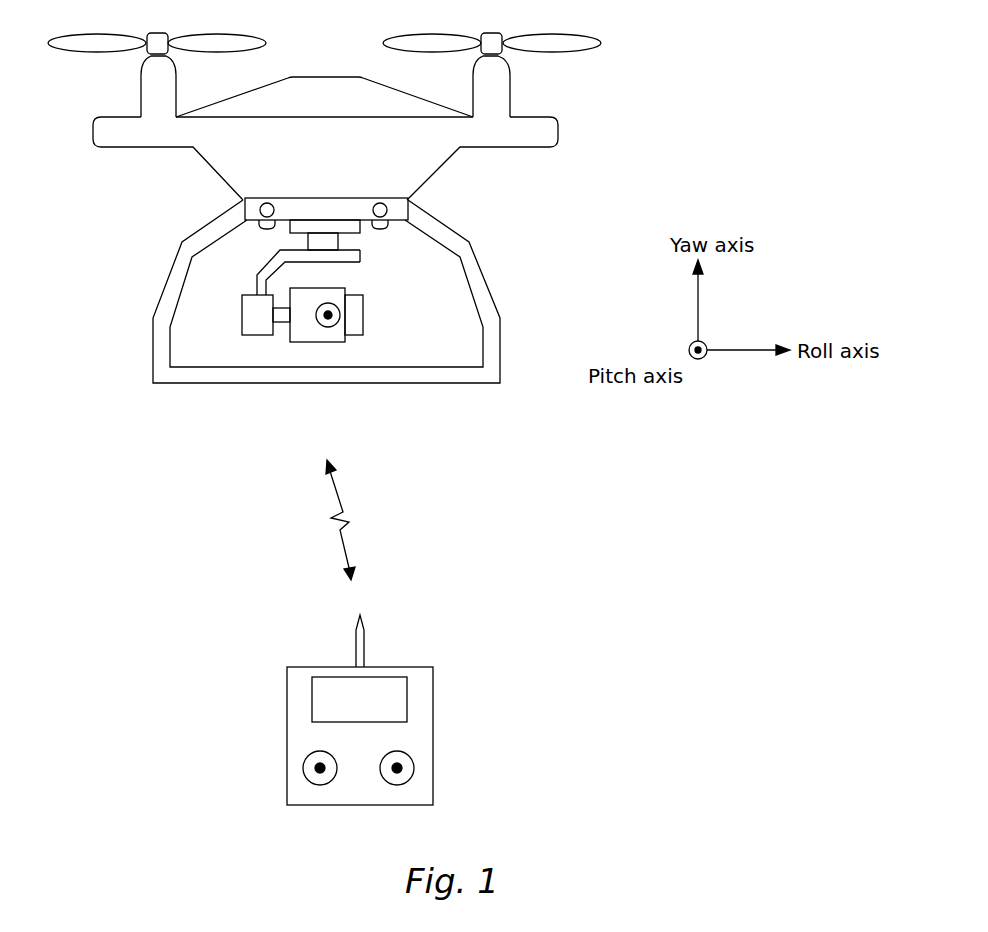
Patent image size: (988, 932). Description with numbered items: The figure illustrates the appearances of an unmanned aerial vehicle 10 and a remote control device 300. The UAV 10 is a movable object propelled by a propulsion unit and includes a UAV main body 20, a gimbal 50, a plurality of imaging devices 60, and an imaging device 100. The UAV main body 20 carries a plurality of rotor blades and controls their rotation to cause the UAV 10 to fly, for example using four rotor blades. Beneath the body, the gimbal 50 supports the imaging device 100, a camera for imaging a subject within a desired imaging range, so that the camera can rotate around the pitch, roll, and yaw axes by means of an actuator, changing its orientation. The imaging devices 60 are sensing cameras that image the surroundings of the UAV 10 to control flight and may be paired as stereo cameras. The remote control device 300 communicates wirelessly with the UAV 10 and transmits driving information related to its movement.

The unmanned aerial vehicle 10 is at (639, 114).
The UAV main body 20 is at (325, 76).
The gimbal 50 is at (257, 270).
The imaging devices 60 is at (262, 225).
The imaging device 100 is at (320, 336).
The remote control device 300 is at (434, 737).